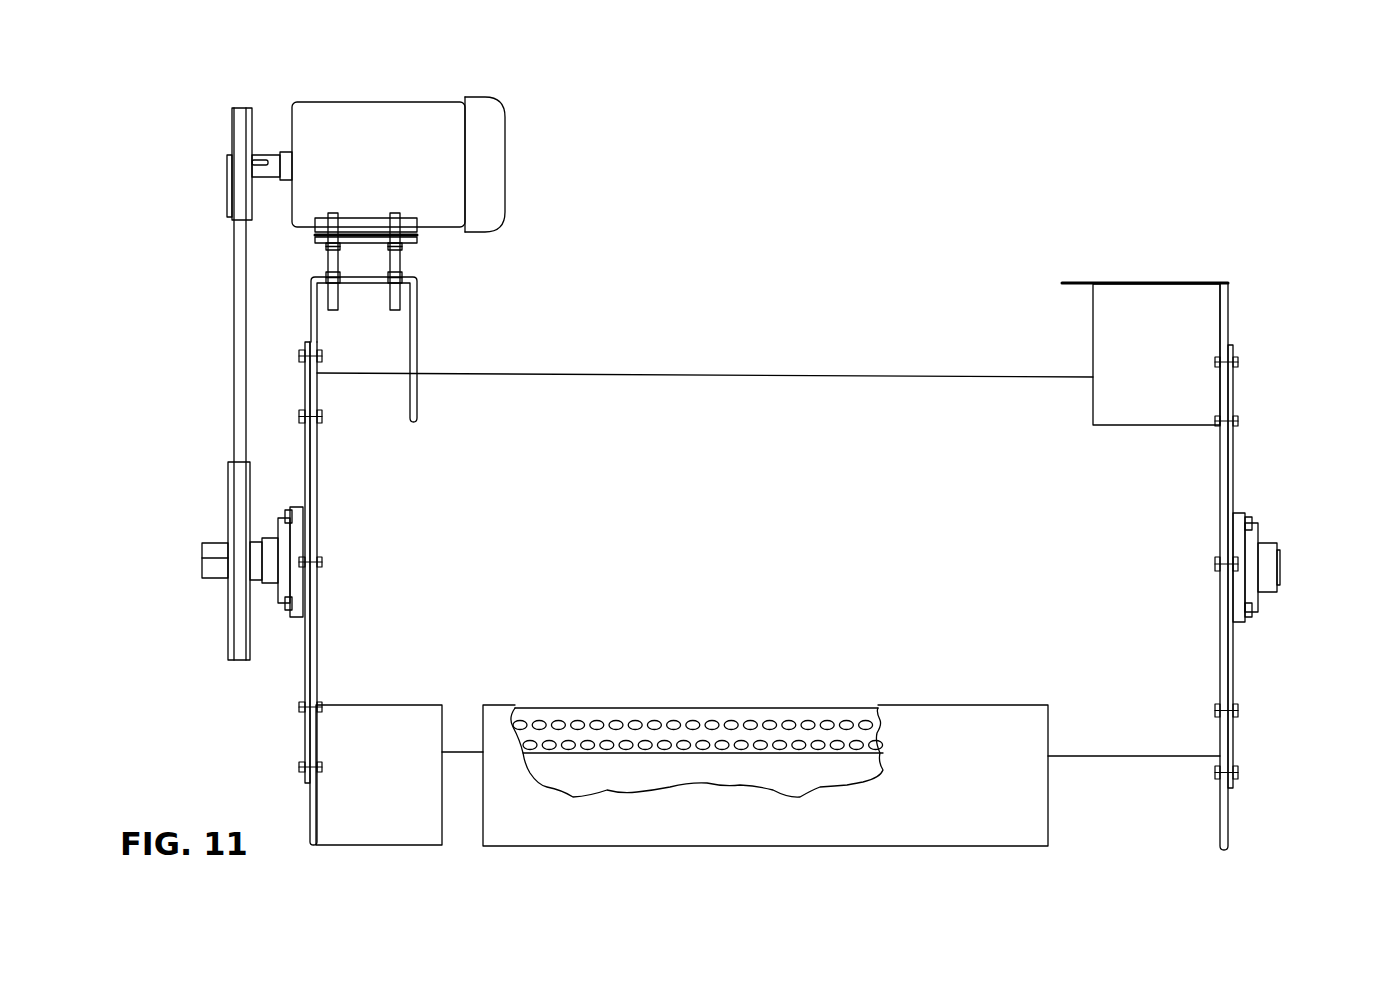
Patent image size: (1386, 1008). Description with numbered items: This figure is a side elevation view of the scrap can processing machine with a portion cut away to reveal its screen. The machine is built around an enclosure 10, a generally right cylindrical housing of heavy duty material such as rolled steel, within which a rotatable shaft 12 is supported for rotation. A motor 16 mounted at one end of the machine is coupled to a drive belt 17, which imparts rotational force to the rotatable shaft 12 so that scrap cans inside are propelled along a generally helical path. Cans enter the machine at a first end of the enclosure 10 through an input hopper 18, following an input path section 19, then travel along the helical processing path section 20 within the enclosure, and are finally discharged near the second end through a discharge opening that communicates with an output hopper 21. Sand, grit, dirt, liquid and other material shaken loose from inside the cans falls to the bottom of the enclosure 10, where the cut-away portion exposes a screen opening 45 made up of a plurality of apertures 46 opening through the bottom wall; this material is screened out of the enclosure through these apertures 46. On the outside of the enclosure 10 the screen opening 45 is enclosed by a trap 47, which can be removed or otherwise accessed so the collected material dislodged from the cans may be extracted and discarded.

The enclosure 10 is at (767, 375).
The rotatable shaft 12 is at (1280, 567).
The motor 16 is at (363, 102).
The drive belt 17 is at (235, 325).
The input hopper 18 is at (1175, 282).
The input path section 19 is at (1118, 265).
The helical processing path section 20 is at (398, 825).
The output hopper 21 is at (339, 845).
The screen opening 45 is at (697, 726).
The apertures 46 is at (788, 727).
The trap 47 is at (1035, 807).